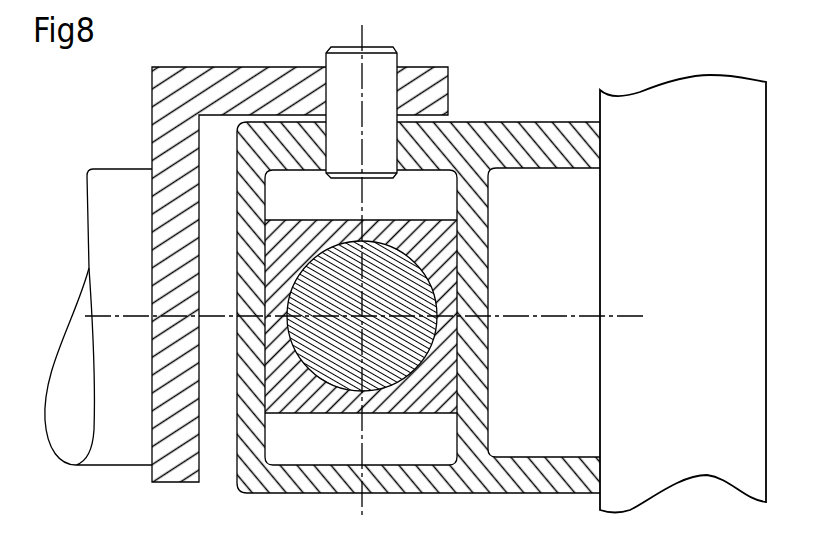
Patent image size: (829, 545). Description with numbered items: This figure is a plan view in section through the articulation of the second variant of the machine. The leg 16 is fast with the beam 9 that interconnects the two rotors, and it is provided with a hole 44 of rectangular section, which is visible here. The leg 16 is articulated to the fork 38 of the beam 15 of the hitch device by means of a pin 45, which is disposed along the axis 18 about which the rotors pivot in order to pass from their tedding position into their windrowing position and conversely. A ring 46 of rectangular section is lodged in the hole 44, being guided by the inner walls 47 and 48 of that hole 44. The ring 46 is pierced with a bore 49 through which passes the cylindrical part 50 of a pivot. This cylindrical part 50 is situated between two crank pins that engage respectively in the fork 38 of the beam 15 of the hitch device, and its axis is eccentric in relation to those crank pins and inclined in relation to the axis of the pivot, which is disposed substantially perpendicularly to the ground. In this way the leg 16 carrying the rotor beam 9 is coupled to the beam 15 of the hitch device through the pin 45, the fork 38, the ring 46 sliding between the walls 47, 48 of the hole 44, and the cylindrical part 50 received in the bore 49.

The beam 9 is at (613, 421).
The beam 15 is at (105, 455).
The leg 16 is at (537, 483).
The axis 18 is at (364, 461).
The fork 38 is at (182, 482).
The hole 44 is at (403, 452).
The pin 45 is at (340, 72).
The ring 46 is at (280, 271).
The inner wall 47 is at (457, 212).
The inner wall 48 is at (268, 211).
The bore 49 is at (307, 370).
The cylindrical part 50 is at (418, 301).